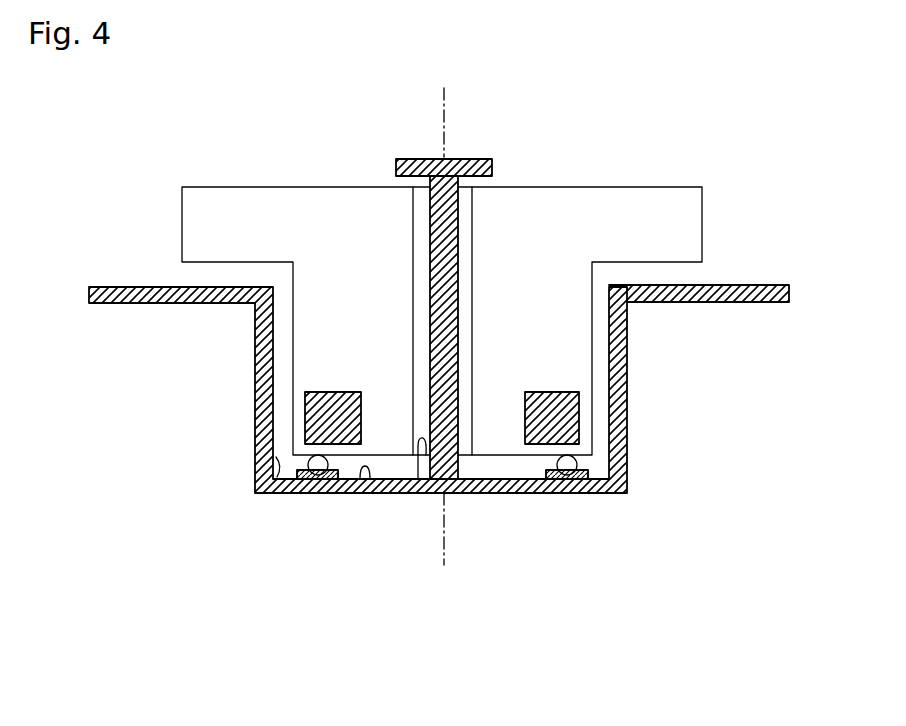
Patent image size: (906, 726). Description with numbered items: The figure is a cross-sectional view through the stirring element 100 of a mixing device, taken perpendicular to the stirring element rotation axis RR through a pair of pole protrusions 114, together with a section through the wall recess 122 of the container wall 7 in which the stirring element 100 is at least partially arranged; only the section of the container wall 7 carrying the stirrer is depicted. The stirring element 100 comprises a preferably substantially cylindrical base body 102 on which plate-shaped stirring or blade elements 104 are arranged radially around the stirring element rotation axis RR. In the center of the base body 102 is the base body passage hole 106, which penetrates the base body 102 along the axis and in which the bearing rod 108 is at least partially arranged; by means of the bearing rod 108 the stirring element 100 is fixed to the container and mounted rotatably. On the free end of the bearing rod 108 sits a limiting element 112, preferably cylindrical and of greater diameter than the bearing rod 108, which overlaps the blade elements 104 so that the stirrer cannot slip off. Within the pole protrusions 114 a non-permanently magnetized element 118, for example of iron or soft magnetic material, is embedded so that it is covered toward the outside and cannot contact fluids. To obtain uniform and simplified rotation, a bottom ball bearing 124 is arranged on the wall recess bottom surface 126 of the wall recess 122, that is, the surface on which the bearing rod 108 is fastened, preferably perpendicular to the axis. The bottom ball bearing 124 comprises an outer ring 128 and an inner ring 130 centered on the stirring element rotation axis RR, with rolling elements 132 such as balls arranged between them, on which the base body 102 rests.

The container wall 7 is at (747, 283).
The stirring element 100 is at (628, 213).
The base body 102 is at (313, 325).
The stirring and/or blade elements 104 is at (220, 206).
The base body passage hole 106 is at (418, 479).
The bearing rod 108 is at (425, 198).
The limiting element 112 is at (486, 159).
The pole protrusions 114 is at (313, 365).
The non-permanently magnetized element 118 is at (330, 423).
The wall recess 122 is at (277, 478).
The bottom ball bearing 124 is at (316, 478).
The wall recess bottom surface 126 is at (370, 479).
The outer ring 128 is at (300, 479).
The inner ring 130 is at (322, 479).
The rolling elements 132 is at (306, 479).
The stirring element rotation axis RR is at (445, 542).